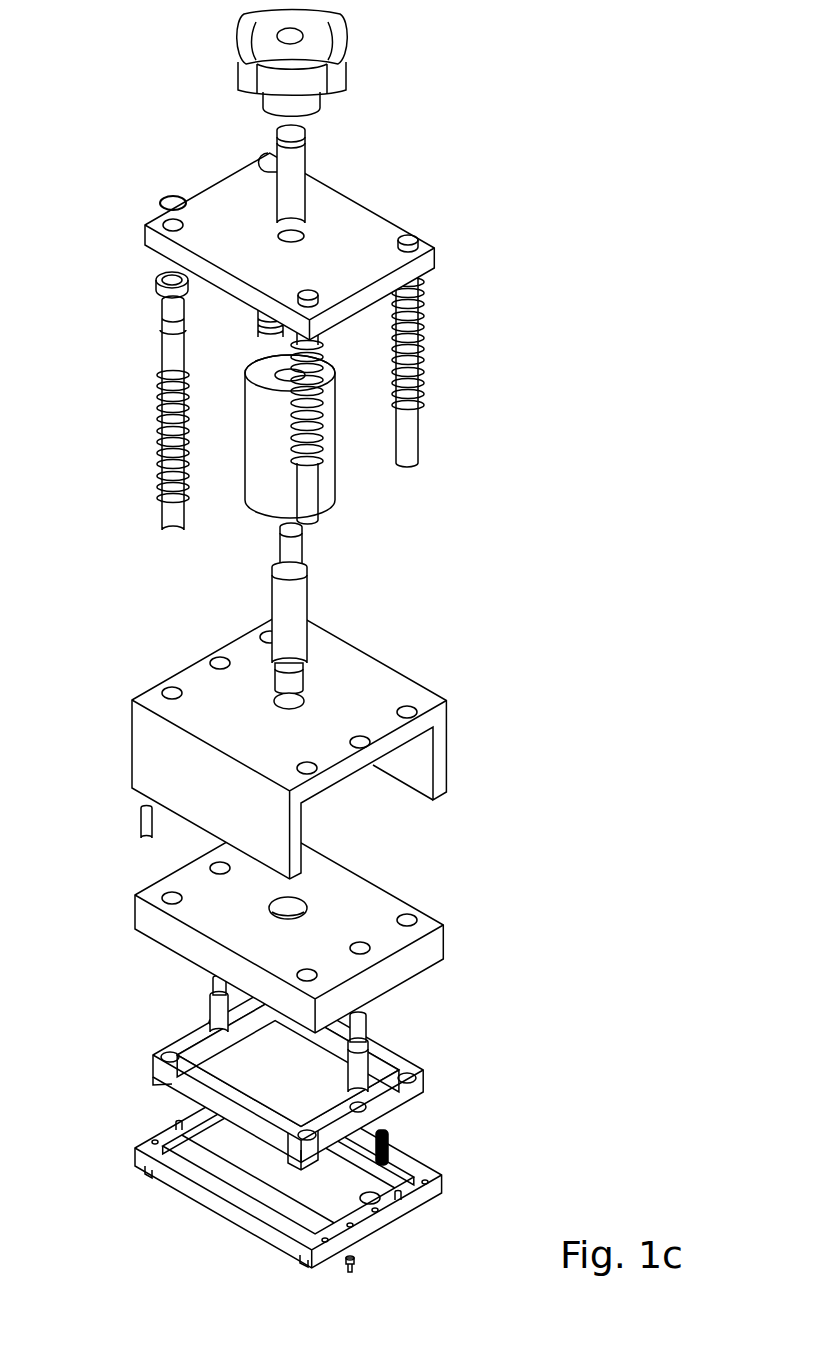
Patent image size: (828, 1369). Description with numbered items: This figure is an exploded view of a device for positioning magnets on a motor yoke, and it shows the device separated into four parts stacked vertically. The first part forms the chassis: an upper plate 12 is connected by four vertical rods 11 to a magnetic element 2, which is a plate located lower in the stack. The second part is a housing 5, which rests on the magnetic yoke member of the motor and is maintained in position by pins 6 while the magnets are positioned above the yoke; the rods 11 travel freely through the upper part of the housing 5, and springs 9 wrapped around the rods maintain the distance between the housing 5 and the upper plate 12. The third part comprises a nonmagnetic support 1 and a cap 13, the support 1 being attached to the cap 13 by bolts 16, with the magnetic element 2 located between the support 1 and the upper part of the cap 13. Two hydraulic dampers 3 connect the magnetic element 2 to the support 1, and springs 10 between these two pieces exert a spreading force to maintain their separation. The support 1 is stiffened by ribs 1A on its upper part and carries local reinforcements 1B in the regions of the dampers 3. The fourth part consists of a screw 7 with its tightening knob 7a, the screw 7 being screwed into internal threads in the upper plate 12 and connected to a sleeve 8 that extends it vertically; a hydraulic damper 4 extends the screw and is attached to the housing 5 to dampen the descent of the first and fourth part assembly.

The tightening knob 7a is at (322, 50).
The screw 7 is at (308, 157).
The upper plate 12 is at (430, 267).
The springs 9 is at (425, 345).
The vertical rods 11 is at (419, 435).
The sleeve 8 is at (338, 487).
The hydraulic damper 4 is at (312, 607).
The housing 5 is at (428, 690).
The pins 6 is at (140, 826).
The cap 13 is at (432, 941).
The hydraulic dampers 3 is at (372, 1047).
The magnetic element 2 is at (426, 1099).
The springs 10 is at (392, 1152).
The nonmagnetic support 1 is at (430, 1190).
The ribs 1A is at (265, 1195).
The reinforcements 1B is at (378, 1200).
The bolts 16 is at (352, 1266).